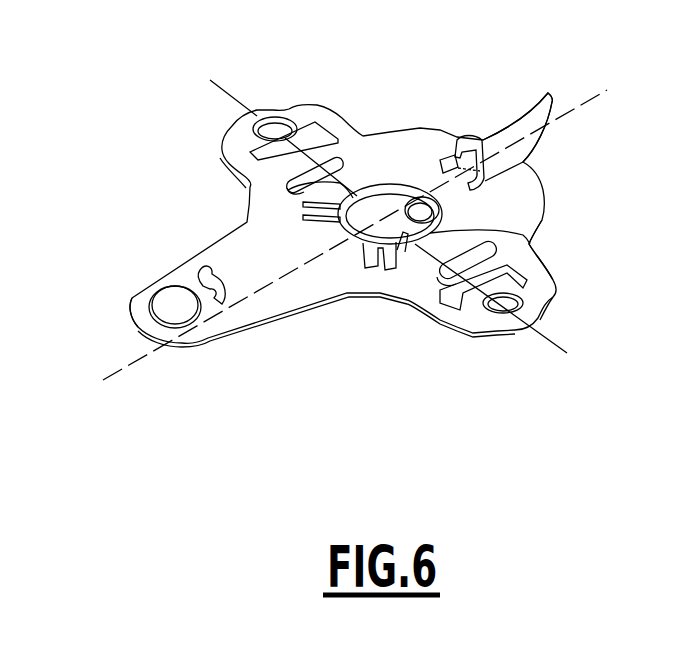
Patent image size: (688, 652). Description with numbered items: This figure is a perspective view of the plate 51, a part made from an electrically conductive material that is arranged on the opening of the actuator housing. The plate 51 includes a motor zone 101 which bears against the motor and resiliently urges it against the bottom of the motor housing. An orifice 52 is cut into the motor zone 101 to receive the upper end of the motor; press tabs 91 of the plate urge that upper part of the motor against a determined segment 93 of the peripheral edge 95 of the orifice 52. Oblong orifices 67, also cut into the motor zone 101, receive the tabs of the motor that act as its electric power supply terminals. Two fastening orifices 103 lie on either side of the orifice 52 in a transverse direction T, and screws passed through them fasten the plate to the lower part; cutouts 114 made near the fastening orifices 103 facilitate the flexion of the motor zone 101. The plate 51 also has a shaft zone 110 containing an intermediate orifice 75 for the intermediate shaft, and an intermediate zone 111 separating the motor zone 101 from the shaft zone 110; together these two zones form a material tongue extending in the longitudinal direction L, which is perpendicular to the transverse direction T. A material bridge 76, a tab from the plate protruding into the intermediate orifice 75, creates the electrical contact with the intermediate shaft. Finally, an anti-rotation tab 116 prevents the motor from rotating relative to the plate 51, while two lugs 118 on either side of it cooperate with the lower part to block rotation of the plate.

The plate 51 is at (431, 118).
The orifice 52 is at (431, 220).
The oblong orifices 67 is at (247, 223).
The intermediate orifice 75 is at (160, 284).
The material bridge 76 is at (199, 296).
The press tabs 91 is at (398, 218).
The determined segment 93 is at (529, 244).
The peripheral edge 95 is at (397, 270).
The motor zone 101 is at (348, 178).
The fastening orifices 103 is at (280, 119).
The shaft zone 110 is at (132, 300).
The intermediate zone 111 is at (307, 302).
The cutouts 114 is at (246, 182).
The anti-rotation tab 116 is at (470, 136).
The lugs 118 is at (549, 92).
The longitudinal direction L is at (133, 364).
The transverse direction T is at (552, 344).